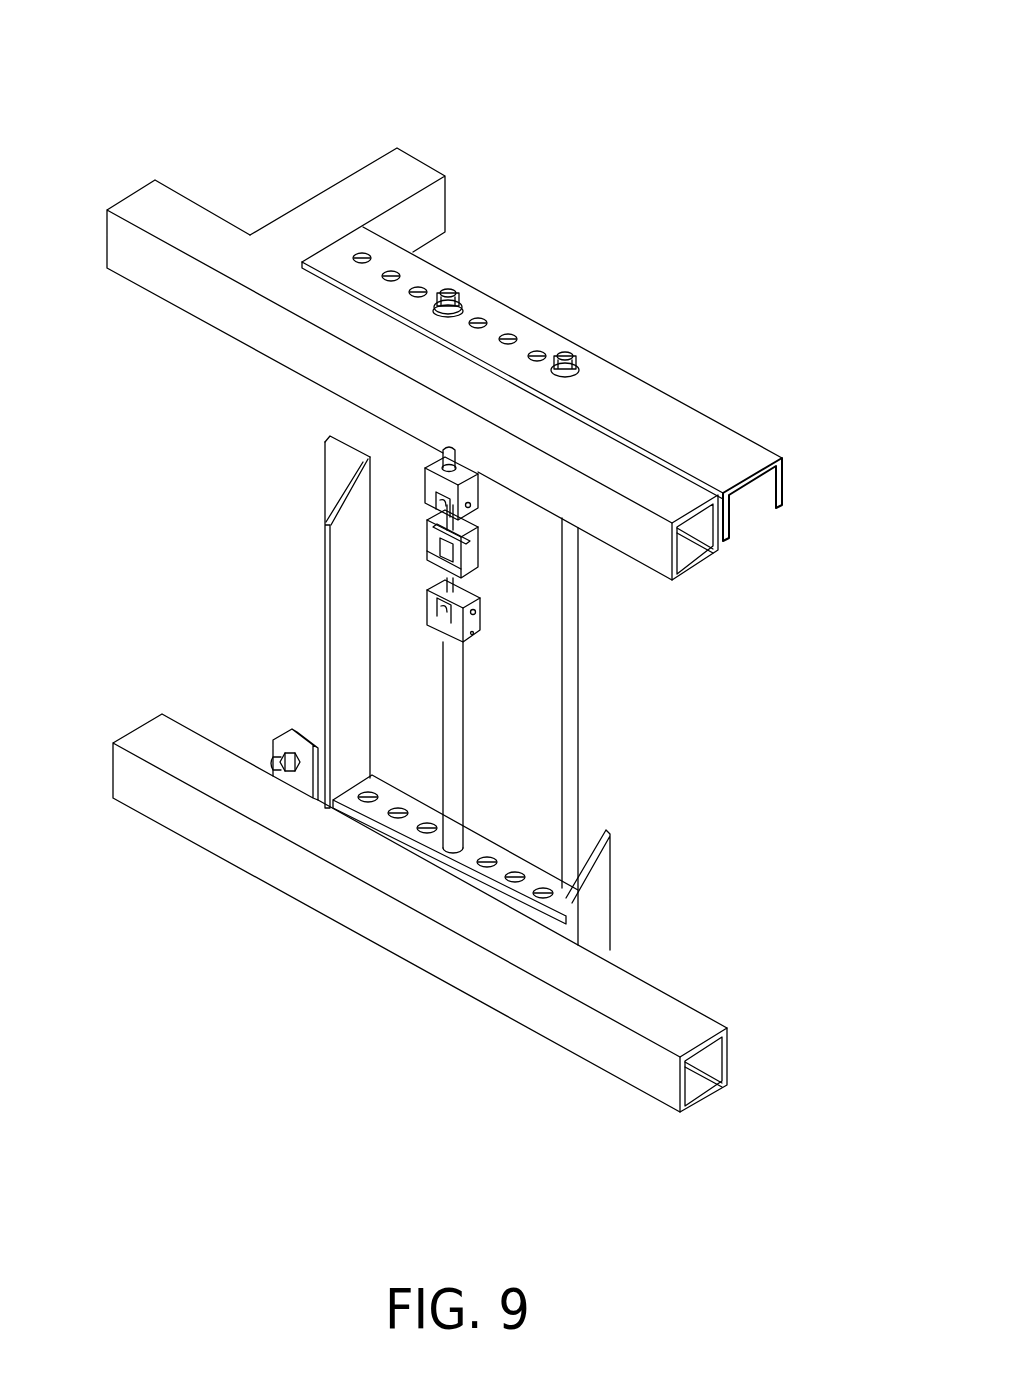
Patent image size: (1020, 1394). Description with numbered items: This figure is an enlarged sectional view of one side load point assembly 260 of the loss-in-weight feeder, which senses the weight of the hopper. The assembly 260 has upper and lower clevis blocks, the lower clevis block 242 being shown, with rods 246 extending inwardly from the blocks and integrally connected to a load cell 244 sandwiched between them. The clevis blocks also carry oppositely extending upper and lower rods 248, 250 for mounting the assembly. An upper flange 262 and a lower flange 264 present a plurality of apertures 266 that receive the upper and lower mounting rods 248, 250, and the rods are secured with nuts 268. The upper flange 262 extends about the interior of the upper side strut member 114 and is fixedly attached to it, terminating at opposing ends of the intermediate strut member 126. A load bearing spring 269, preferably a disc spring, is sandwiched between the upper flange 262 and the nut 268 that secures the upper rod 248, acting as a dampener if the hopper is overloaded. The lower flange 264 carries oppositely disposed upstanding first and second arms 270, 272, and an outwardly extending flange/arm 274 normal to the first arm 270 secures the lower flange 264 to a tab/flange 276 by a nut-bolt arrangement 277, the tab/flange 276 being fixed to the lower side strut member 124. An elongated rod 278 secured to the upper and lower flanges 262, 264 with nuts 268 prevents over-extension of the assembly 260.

The upper side strut member 114 is at (167, 210).
The lower side strut member 124 is at (145, 740).
The intermediate strut member 126 is at (337, 198).
The lower clevis block 242 is at (477, 500).
The load cell 244 is at (477, 580).
The rod 246 is at (478, 533).
The upper rod 248 is at (443, 452).
The lower rod 250 is at (456, 770).
The side load point assembly 260 is at (690, 124).
The upper flange 262 is at (740, 455).
The lower flange 264 is at (508, 860).
The apertures 266 is at (508, 337).
The nut 268 is at (458, 298).
The load bearing spring 269 is at (433, 313).
The first arm 270 is at (345, 550).
The second arm 272 is at (596, 918).
The outwardly extending flange/arm 274 is at (333, 473).
The tab/flange 276 is at (287, 728).
The nut-bolt arrangement 277 is at (275, 741).
The elongated rod 278 is at (575, 812).